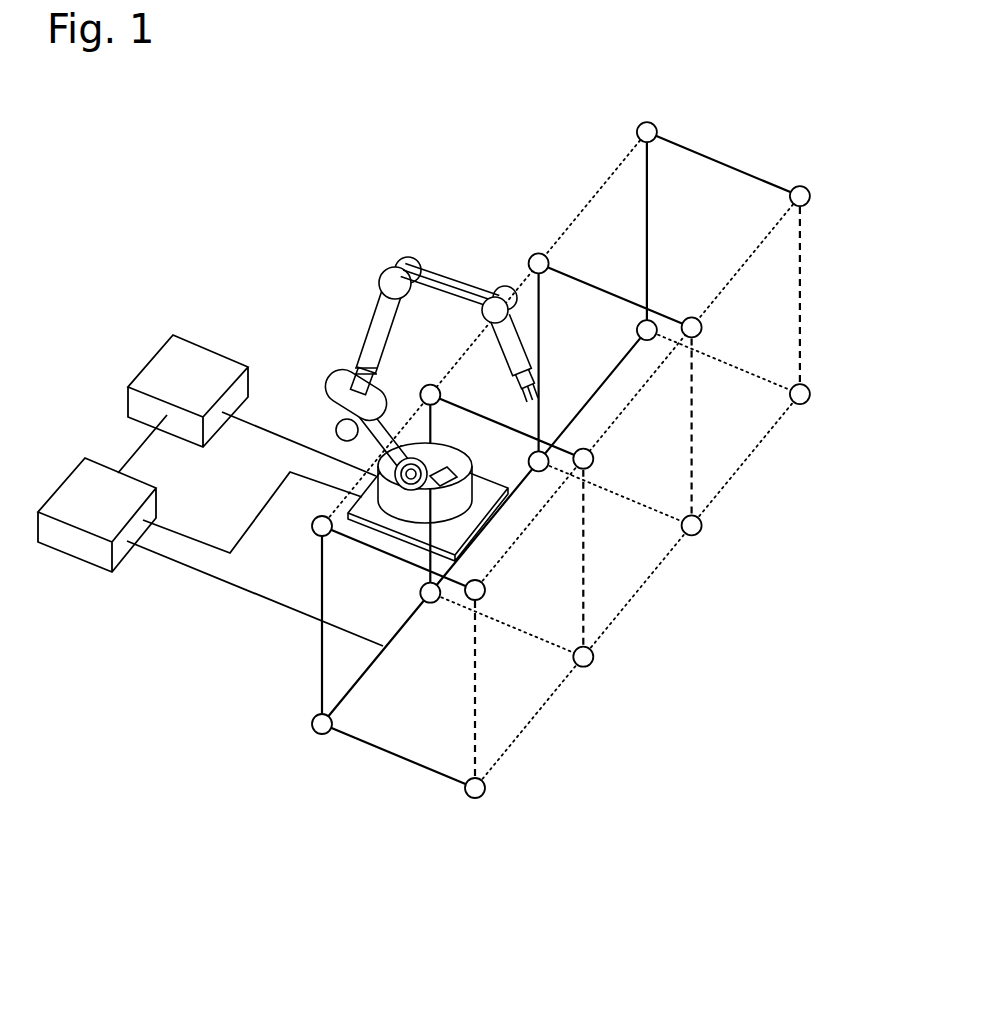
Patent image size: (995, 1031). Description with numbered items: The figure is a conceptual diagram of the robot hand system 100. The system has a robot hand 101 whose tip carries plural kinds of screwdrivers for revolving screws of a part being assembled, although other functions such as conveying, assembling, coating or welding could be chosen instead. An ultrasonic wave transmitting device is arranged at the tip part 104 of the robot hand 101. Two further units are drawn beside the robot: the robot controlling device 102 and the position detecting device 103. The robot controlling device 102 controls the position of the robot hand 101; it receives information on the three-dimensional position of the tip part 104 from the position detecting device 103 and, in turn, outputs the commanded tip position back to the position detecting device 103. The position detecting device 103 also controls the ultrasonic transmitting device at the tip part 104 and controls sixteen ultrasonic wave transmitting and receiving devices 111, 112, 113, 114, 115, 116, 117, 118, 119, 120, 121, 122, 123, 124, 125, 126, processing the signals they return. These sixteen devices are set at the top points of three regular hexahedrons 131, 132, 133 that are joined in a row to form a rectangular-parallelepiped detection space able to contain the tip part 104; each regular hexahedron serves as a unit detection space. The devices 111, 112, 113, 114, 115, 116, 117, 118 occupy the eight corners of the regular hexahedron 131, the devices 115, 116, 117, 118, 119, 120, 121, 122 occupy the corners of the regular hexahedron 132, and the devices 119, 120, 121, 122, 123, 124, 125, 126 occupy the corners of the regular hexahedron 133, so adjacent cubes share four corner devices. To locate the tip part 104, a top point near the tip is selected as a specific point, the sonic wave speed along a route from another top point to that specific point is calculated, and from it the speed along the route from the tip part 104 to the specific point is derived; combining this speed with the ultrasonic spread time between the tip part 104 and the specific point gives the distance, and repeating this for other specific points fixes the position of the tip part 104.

The robot hand system 100 is at (296, 186).
The robot hand 101 is at (428, 334).
The robot controlling device 102 is at (196, 356).
The position detecting device 103 is at (84, 470).
The tip part 104 is at (520, 376).
The ultrasonic wave transmitting and receiving device 111 is at (323, 735).
The ultrasonic wave transmitting and receiving device 112 is at (475, 799).
The ultrasonic wave transmitting and receiving device 113 is at (325, 537).
The ultrasonic wave transmitting and receiving device 114 is at (486, 590).
The ultrasonic wave transmitting and receiving device 115 is at (431, 603).
The ultrasonic wave transmitting and receiving device 116 is at (594, 660).
The ultrasonic wave transmitting and receiving device 117 is at (430, 384).
The ultrasonic wave transmitting and receiving device 118 is at (594, 457).
The ultrasonic wave transmitting and receiving device 119 is at (528, 456).
The ultrasonic wave transmitting and receiving device 120 is at (702, 528).
The ultrasonic wave transmitting and receiving device 121 is at (537, 252).
The ultrasonic wave transmitting and receiving device 122 is at (692, 316).
The ultrasonic wave transmitting and receiving device 123 is at (636, 330).
The ultrasonic wave transmitting and receiving device 124 is at (789, 393).
The ultrasonic wave transmitting and receiving device 125 is at (636, 130).
The ultrasonic wave transmitting and receiving device 126 is at (800, 185).
The regular hexahedron 131 is at (528, 730).
The regular hexahedron 132 is at (644, 585).
The regular hexahedron 133 is at (746, 463).